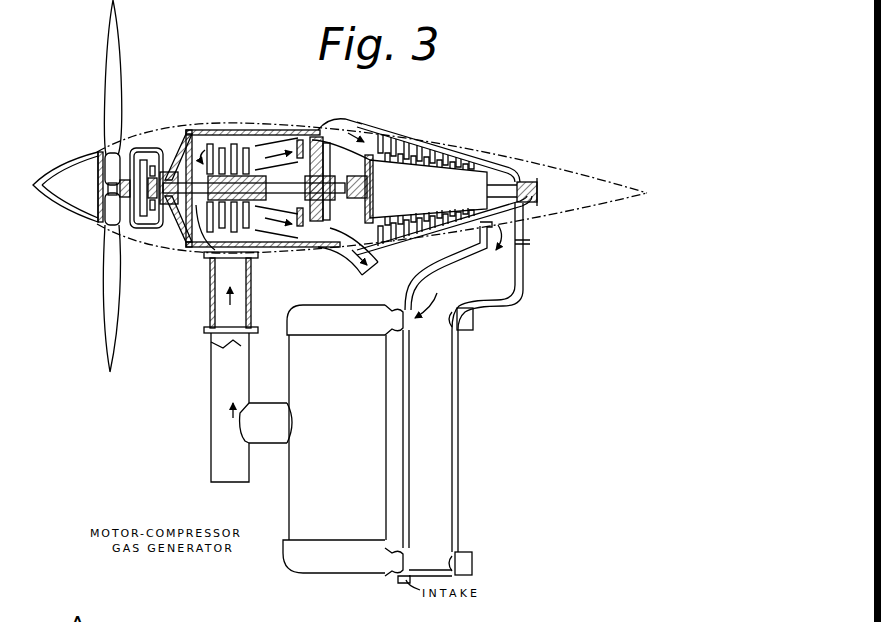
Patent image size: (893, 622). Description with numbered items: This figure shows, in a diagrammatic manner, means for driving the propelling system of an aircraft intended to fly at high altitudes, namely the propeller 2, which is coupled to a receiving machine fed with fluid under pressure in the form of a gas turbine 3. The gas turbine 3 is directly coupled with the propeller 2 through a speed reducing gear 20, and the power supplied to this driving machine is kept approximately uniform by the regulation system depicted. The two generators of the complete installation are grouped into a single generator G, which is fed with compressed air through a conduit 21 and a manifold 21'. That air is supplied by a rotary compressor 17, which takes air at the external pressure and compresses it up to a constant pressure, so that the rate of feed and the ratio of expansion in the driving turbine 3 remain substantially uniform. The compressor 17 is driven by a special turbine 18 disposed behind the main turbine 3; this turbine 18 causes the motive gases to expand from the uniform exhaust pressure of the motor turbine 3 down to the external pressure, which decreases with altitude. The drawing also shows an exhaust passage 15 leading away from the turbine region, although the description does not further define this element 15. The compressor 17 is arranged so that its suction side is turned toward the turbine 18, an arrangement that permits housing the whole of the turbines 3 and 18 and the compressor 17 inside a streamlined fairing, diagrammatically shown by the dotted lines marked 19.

The propeller 2 is at (107, 297).
The gas turbine 3 is at (210, 98).
The exhaust pipe 15 is at (272, 423).
The rotary compressor 17 is at (432, 156).
The special turbine 18 is at (296, 135).
The streamlined fairing 19 is at (585, 160).
The speed reducing gear 20 is at (166, 237).
The conduit 21 is at (476, 266).
The manifold 21' is at (464, 442).
The generator G is at (312, 495).